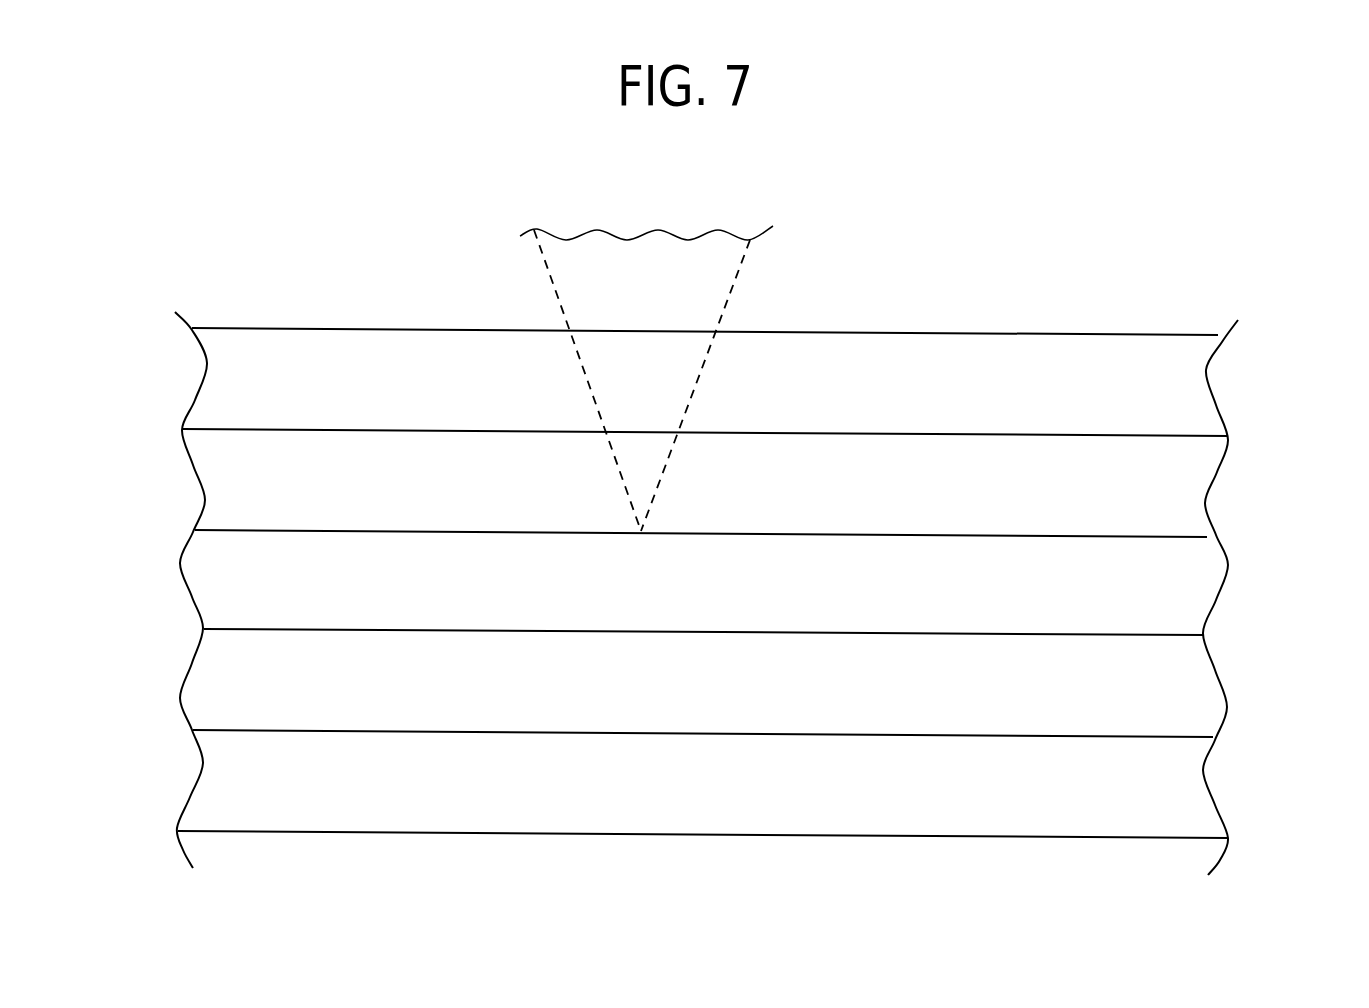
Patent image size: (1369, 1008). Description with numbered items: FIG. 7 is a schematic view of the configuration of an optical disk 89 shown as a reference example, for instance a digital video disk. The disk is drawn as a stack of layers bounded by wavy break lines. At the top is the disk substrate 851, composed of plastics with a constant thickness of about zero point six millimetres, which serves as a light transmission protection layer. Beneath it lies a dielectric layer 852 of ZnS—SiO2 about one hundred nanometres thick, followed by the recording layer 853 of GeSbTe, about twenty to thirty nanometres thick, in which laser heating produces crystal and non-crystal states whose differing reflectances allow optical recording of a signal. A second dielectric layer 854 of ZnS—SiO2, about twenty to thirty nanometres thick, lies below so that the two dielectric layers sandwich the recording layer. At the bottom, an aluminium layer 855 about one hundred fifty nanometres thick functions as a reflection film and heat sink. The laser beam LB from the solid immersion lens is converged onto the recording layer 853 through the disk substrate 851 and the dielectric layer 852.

The optical disk 89 is at (1140, 291).
The disk substrate 851 is at (1200, 400).
The dielectric layer 852 is at (1200, 485).
The recording layer 853 is at (1200, 585).
The dielectric layer 854 is at (1198, 687).
The aluminium layer 855 is at (1198, 788).
The laser beam LB is at (722, 282).